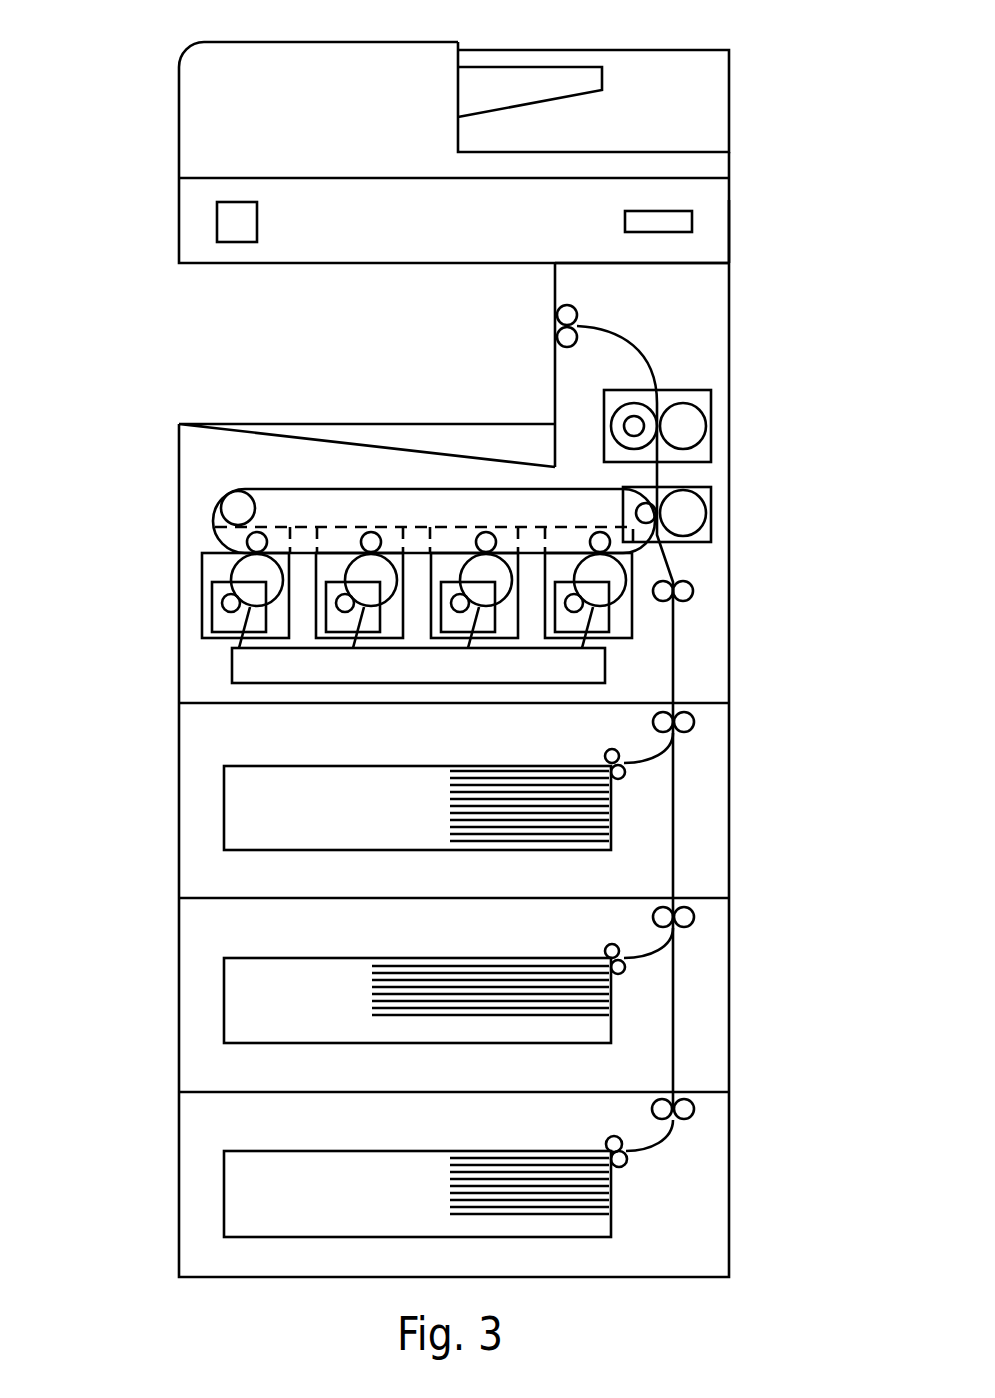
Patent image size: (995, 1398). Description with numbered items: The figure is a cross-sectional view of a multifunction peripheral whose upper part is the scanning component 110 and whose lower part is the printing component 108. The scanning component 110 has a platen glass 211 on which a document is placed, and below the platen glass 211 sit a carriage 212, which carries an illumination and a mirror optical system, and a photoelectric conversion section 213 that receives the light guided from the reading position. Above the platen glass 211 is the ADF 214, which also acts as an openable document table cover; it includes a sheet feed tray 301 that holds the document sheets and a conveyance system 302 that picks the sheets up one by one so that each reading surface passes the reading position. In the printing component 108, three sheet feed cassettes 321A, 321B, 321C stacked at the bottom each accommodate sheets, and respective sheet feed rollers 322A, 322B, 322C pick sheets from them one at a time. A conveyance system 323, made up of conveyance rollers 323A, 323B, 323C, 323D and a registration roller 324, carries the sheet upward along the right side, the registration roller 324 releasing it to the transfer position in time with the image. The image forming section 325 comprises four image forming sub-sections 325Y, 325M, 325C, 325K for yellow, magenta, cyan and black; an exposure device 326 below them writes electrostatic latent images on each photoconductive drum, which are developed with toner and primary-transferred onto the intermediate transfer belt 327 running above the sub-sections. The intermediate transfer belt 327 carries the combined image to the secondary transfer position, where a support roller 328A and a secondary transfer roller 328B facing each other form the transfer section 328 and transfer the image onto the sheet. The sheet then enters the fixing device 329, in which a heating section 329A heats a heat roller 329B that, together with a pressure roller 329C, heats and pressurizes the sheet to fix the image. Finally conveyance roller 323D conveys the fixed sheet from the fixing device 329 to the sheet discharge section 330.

The printing component 108 is at (736, 341).
The scanning component 110 is at (735, 256).
The platen glass 211 is at (632, 179).
The carriage 212 is at (217, 221).
The photoelectric conversion section 213 is at (692, 222).
The ADF 214 is at (734, 82).
The sheet feed tray 301 is at (508, 66).
The conveyance system 302 is at (179, 108).
The sheet feed cassette 321A is at (611, 850).
The sheet feed cassette 321B is at (611, 1043).
The sheet feed cassette 321C is at (611, 1237).
The sheet feed roller 322A is at (623, 775).
The sheet feed roller 322B is at (623, 970).
The sheet feed roller 322C is at (625, 1162).
The conveyance system 323 is at (673, 815).
The conveyance roller 323A is at (695, 724).
The conveyance roller 323B is at (695, 919).
The conveyance roller 323C is at (695, 1111).
The conveyance roller 323D is at (559, 311).
The registration roller 324 is at (693, 592).
The image forming section 325 is at (349, 512).
The image forming sub-section 325Y is at (202, 557).
The image forming sub-section 325M is at (315, 526).
The image forming sub-section 325C is at (317, 527).
The image forming sub-section 325K is at (545, 527).
The exposure device 326 is at (605, 665).
The intermediate transfer belt 327 is at (212, 512).
The transfer section 328 is at (712, 513).
The support roller 328A is at (638, 508).
The secondary transfer roller 328B is at (697, 533).
The fixing device 329 is at (712, 415).
The heating section 329A is at (622, 428).
The heat roller 329B is at (624, 425).
The pressure roller 329C is at (703, 438).
The sheet discharge section 330 is at (428, 527).